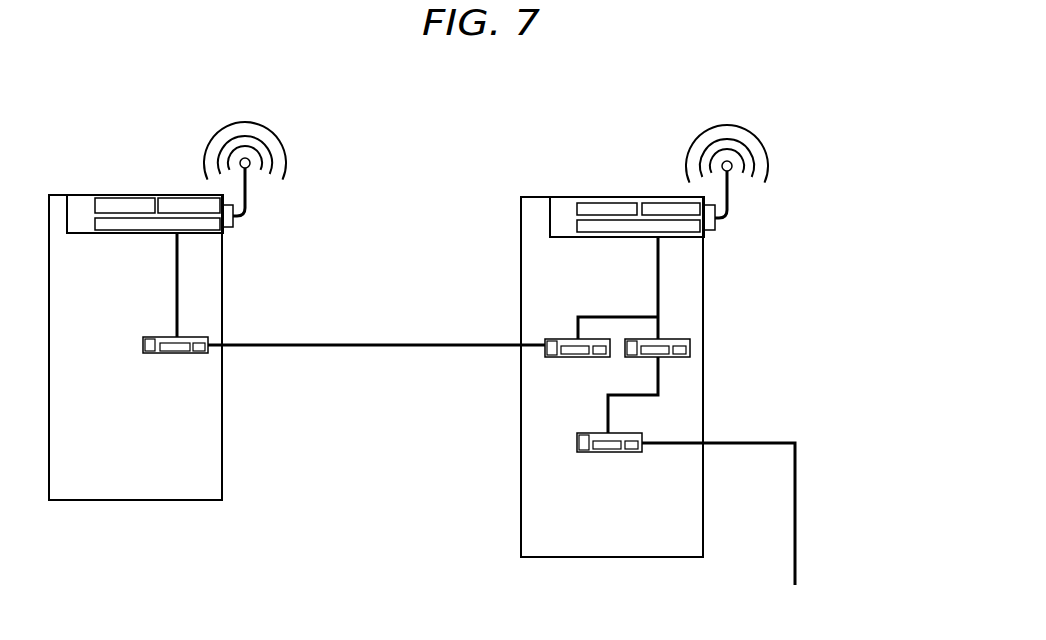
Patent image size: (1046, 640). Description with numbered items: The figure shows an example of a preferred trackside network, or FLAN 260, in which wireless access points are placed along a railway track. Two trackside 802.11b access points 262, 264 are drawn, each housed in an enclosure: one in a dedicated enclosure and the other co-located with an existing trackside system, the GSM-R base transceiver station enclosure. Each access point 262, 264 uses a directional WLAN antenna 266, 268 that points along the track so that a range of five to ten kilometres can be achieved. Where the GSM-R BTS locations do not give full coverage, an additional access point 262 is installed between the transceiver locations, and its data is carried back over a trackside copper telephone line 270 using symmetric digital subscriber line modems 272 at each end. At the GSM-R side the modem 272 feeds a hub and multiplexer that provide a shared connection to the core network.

The trackside network (FLAN) 260 is at (311, 489).
The trackside 802.11b access point 262 is at (223, 270).
The trackside 802.11b access point 264 is at (705, 275).
The directional WLAN antenna 266 is at (247, 203).
The directional WLAN antenna 268 is at (728, 207).
The trackside copper telephone line 270 is at (240, 346).
The sDSL modem 272 is at (141, 341).